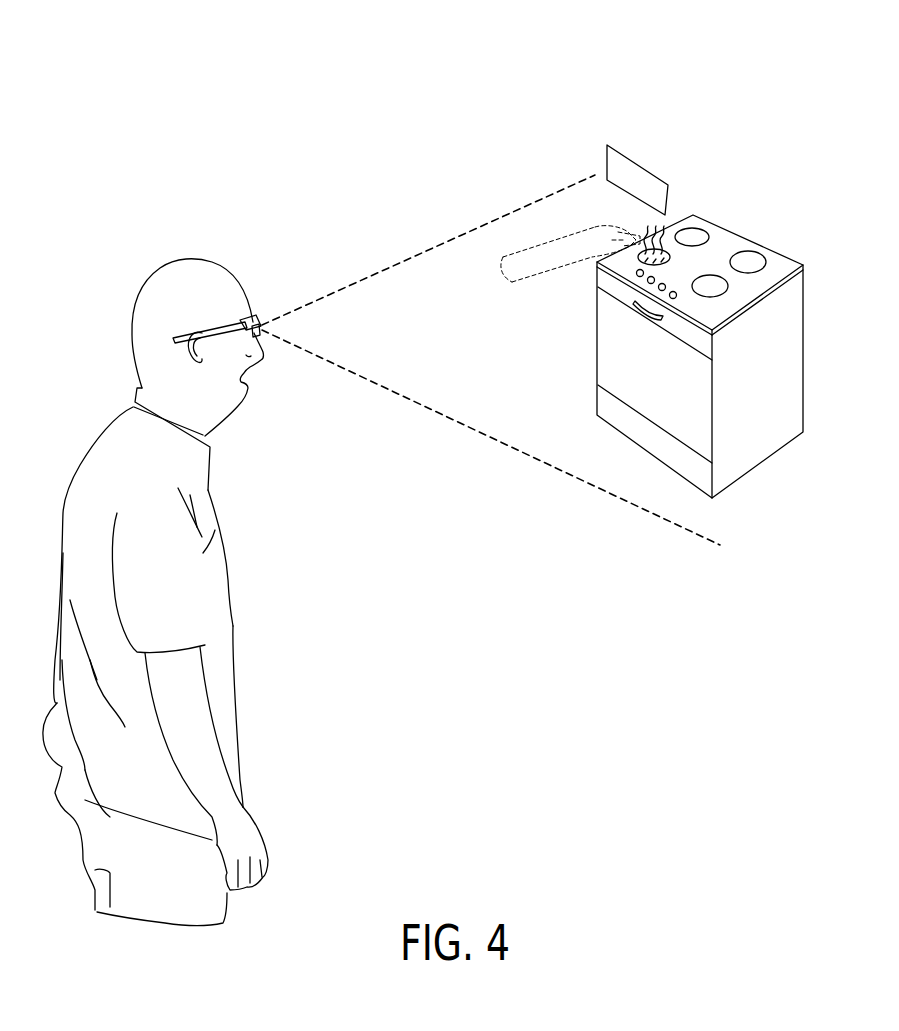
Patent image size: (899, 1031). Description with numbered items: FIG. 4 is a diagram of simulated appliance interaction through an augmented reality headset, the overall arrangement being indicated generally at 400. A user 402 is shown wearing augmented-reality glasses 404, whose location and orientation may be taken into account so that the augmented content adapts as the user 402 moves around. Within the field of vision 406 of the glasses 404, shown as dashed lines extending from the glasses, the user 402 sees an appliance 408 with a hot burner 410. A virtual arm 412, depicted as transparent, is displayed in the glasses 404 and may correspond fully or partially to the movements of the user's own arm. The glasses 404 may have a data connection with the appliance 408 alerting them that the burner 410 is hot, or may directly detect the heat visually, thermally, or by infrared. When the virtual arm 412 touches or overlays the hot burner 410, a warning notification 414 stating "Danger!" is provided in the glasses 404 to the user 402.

The environment / system 400 is at (170, 84).
The user 402 is at (148, 277).
The augmented-reality glasses 404 is at (253, 327).
The field of vision 406 is at (407, 255).
The appliance 408 is at (743, 448).
The hot burner 410 is at (667, 247).
The virtual arm 412 is at (540, 237).
The warning notification 414 is at (638, 162).